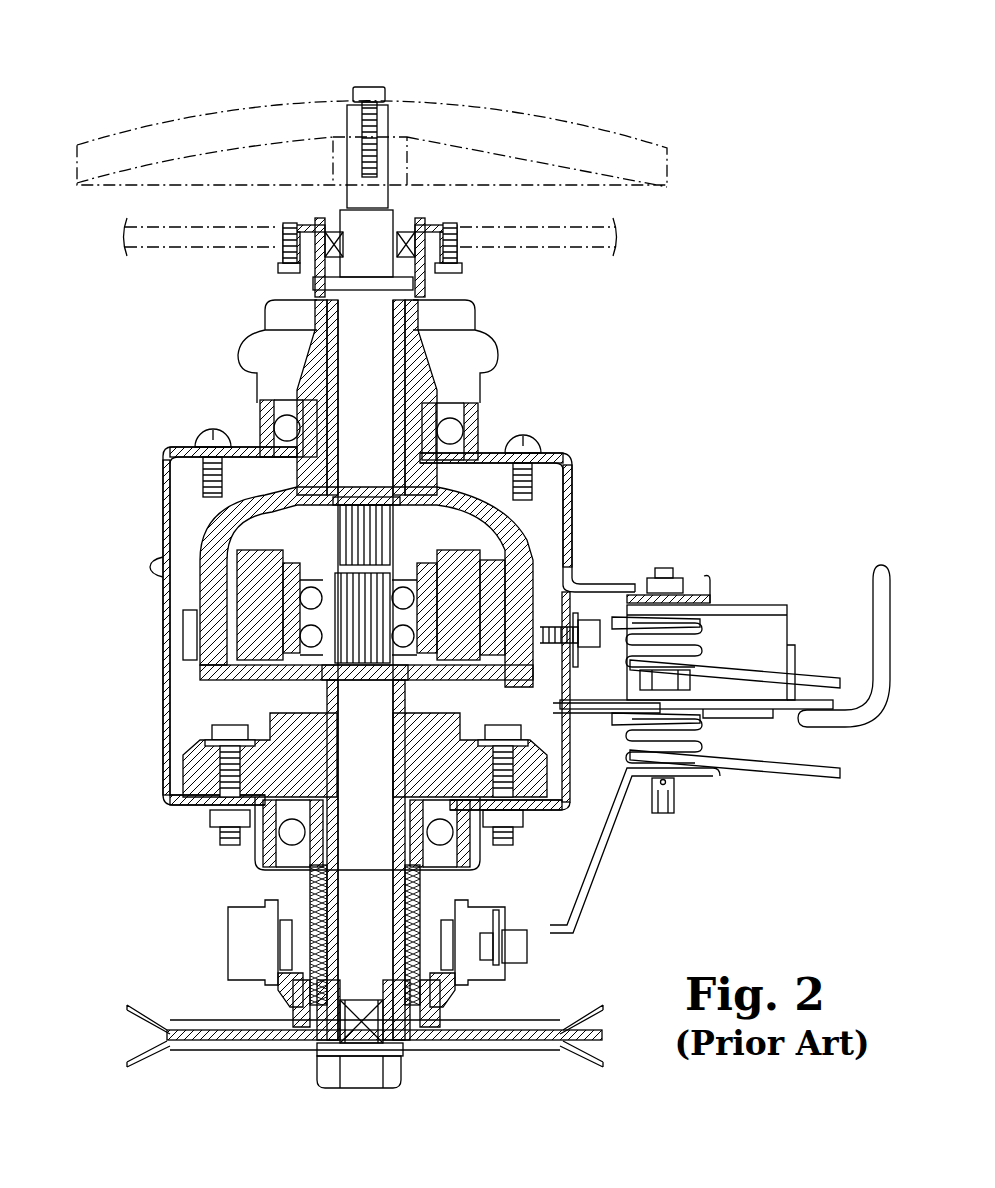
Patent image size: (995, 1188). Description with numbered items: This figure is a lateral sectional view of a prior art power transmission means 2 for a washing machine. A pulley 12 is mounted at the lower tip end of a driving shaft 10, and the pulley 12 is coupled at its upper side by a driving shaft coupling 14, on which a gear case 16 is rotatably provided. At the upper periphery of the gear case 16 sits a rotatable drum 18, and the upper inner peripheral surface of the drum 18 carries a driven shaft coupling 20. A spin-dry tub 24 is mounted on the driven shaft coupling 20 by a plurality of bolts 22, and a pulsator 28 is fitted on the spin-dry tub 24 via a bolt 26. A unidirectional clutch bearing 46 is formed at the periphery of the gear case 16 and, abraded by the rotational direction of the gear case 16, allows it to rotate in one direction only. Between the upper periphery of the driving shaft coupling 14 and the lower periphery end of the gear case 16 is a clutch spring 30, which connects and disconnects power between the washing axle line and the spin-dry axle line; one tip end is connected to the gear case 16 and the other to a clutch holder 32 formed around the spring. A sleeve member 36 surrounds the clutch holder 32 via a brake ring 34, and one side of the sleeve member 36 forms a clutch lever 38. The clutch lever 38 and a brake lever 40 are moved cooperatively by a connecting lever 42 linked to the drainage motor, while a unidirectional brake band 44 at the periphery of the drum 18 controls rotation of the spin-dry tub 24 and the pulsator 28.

The power transmission means 2 is at (728, 382).
The driving shaft 10 is at (355, 862).
The pulley 12 is at (538, 1063).
The driving shaft coupling 14 is at (317, 1040).
The gear case 16 is at (257, 683).
The drum 18 is at (478, 505).
The driven shaft coupling 20 is at (413, 380).
The bolts 22 is at (448, 225).
The spin-dry tub 24 is at (183, 235).
The bolt 26 is at (370, 87).
The pulsator 28 is at (585, 125).
The clutch spring 30 is at (440, 997).
The clutch holder 32 is at (283, 997).
The brake ring 34 is at (280, 940).
The sleeve member 36 is at (235, 925).
The clutch lever 38 is at (718, 770).
The brake lever 40 is at (770, 640).
The connecting lever 42 is at (885, 565).
The unidirectional brake band 44 is at (183, 640).
The unidirectional clutch bearing 46 is at (245, 848).